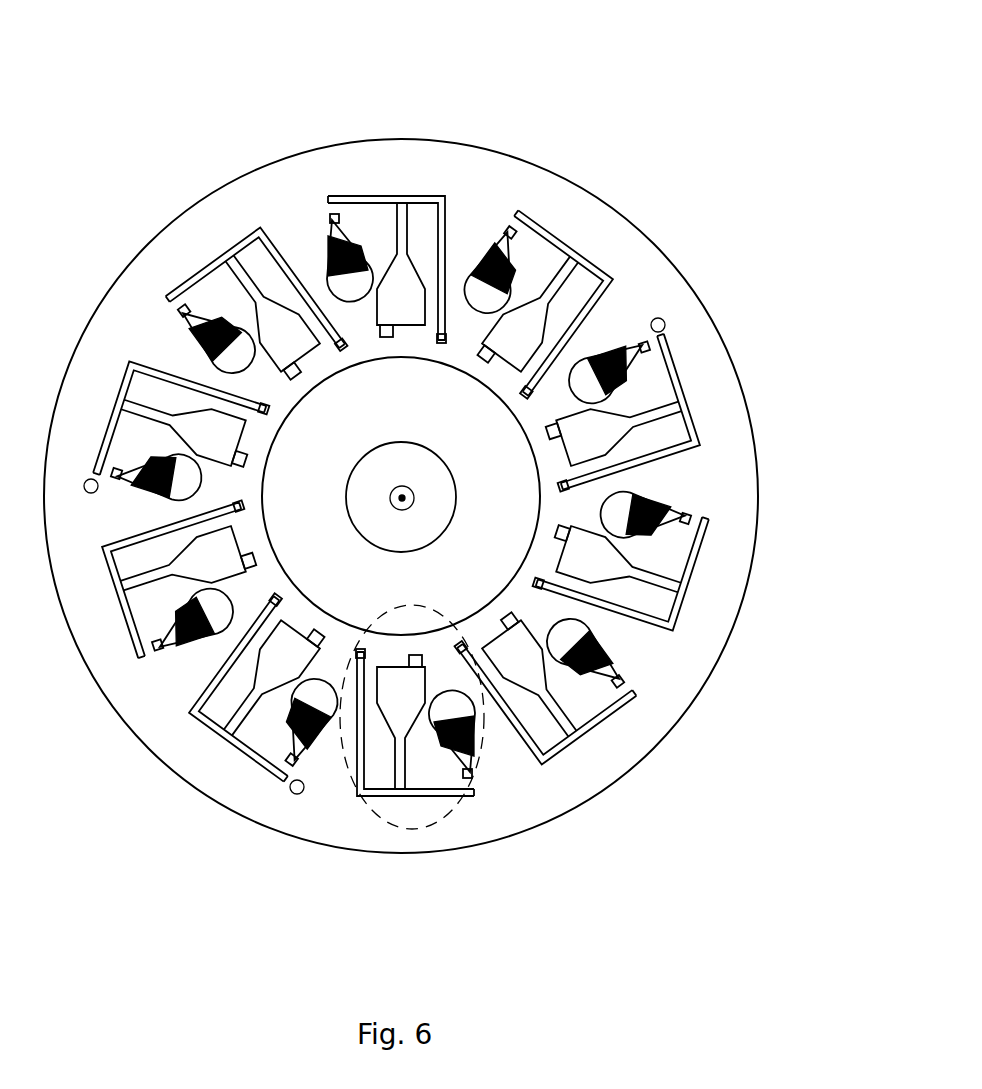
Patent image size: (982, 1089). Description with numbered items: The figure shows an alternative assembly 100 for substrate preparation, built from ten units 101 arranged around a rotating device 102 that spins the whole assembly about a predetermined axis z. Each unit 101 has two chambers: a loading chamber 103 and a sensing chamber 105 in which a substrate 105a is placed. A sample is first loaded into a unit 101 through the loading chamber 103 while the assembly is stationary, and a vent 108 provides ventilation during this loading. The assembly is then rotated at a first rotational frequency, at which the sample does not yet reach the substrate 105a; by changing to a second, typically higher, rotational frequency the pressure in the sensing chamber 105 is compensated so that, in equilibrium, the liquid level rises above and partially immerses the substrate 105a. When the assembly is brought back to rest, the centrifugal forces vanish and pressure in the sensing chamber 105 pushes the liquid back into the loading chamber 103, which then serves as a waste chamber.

The assembly 100 is at (438, 138).
The unit 101 is at (408, 808).
The rotating device 102 is at (718, 483).
The loading chamber 103 is at (277, 313).
The sensing chamber 105 is at (233, 353).
The substrate 105a is at (197, 343).
The vent 108 is at (265, 410).